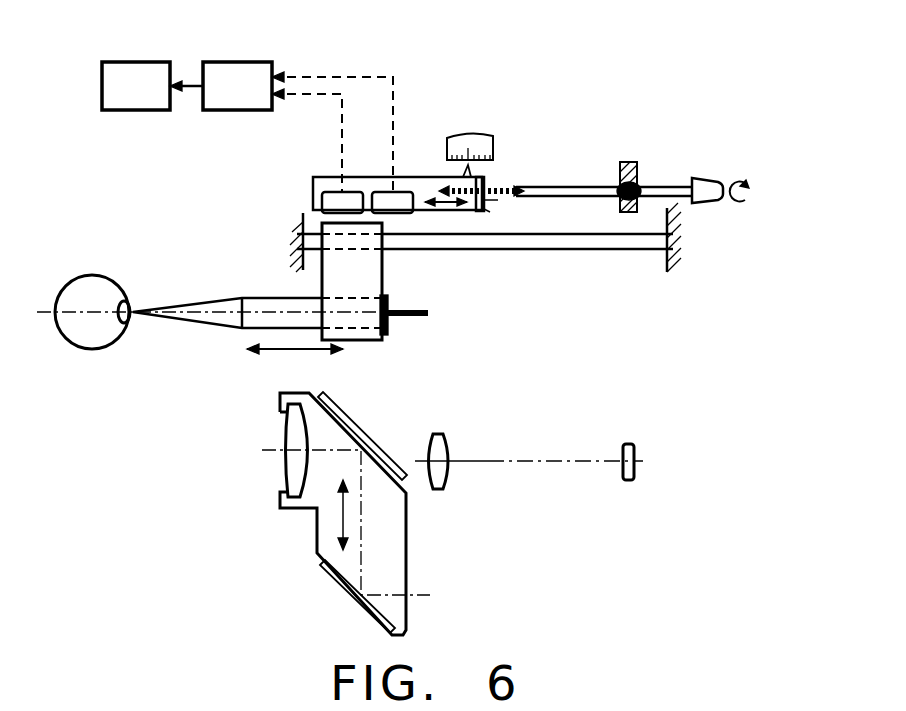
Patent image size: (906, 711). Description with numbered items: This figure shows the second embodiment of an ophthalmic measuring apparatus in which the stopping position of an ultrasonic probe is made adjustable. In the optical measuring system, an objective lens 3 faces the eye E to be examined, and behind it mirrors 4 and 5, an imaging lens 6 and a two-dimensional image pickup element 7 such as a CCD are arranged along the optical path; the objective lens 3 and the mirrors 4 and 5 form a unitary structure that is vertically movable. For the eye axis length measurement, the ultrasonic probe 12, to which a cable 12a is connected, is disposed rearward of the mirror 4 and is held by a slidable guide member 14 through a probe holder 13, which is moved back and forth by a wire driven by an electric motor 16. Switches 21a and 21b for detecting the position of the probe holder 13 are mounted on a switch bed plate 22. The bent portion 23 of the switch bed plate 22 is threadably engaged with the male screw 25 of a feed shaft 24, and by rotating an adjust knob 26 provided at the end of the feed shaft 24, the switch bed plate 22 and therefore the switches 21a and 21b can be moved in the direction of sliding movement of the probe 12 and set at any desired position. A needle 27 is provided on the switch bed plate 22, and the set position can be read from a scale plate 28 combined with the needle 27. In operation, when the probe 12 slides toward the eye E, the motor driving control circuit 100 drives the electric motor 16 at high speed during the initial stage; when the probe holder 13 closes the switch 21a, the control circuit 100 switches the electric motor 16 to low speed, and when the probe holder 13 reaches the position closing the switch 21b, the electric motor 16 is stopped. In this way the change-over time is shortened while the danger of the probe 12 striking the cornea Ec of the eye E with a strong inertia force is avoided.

The objective lens 3 is at (290, 465).
The mirror 4 is at (362, 435).
The mirror 5 is at (328, 580).
The imaging lens 6 is at (440, 490).
The two-dimensional image pickup element 7 is at (628, 482).
The ultrasonic probe 12 is at (250, 298).
The cable 12a is at (428, 316).
The probe holder 13 is at (372, 272).
The slidable guide member 14 is at (613, 250).
The electric motor 16 is at (146, 60).
The motor driving control circuit 100 is at (252, 60).
The switch 21a is at (400, 196).
The switch 21b is at (322, 200).
The switch bed plate 22 is at (325, 178).
The bent portion 23 is at (490, 212).
The feed shaft 24 is at (583, 187).
The male screw 25 is at (498, 200).
The adjust knob 26 is at (706, 178).
The needle 27 is at (484, 176).
The scale plate 28 is at (493, 136).
The eye to be examined E is at (76, 286).
The cornea Ec is at (126, 298).